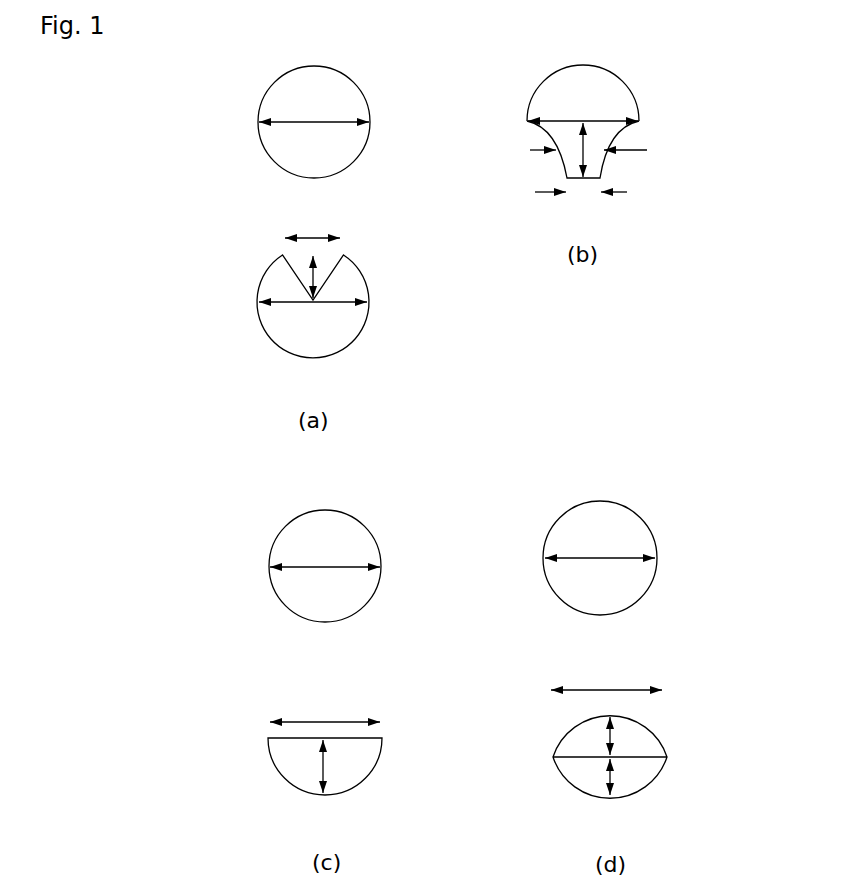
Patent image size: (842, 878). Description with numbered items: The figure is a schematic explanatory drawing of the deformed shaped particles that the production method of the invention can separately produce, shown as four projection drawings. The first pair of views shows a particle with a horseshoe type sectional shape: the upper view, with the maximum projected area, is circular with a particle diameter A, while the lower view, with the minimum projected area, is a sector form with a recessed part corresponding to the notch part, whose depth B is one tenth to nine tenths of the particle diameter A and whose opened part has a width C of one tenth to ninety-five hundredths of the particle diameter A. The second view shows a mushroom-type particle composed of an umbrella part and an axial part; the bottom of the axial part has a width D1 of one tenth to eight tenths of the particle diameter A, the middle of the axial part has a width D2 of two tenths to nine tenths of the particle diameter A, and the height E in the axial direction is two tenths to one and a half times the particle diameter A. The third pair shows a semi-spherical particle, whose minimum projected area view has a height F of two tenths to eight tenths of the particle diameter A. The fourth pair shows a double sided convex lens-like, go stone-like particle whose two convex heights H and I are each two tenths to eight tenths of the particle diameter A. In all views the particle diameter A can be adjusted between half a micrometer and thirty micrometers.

The particle diameter A is at (316, 122).
The depth B is at (314, 299).
The width C is at (315, 236).
The width D1 is at (581, 209).
The width D2 is at (604, 153).
The height E is at (585, 150).
The height F is at (325, 763).
The height H is at (611, 737).
The height I is at (613, 783).